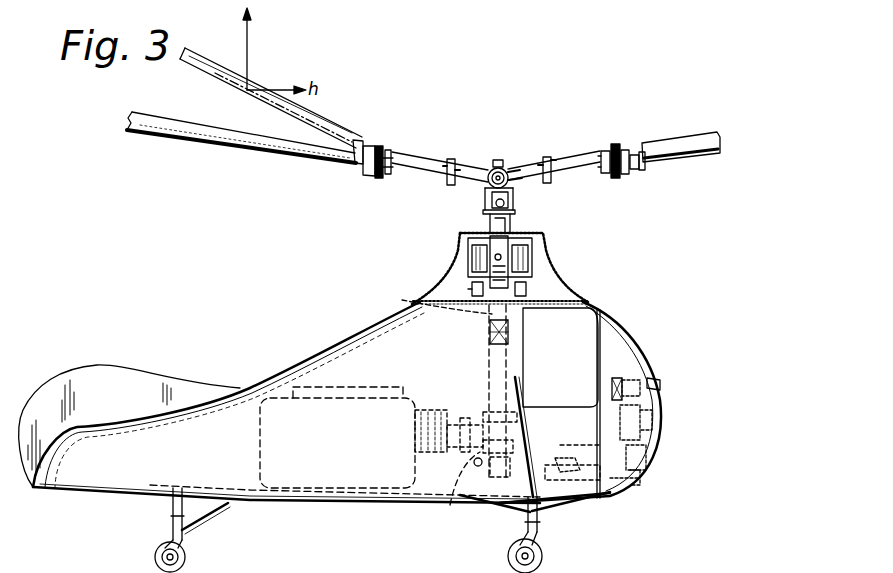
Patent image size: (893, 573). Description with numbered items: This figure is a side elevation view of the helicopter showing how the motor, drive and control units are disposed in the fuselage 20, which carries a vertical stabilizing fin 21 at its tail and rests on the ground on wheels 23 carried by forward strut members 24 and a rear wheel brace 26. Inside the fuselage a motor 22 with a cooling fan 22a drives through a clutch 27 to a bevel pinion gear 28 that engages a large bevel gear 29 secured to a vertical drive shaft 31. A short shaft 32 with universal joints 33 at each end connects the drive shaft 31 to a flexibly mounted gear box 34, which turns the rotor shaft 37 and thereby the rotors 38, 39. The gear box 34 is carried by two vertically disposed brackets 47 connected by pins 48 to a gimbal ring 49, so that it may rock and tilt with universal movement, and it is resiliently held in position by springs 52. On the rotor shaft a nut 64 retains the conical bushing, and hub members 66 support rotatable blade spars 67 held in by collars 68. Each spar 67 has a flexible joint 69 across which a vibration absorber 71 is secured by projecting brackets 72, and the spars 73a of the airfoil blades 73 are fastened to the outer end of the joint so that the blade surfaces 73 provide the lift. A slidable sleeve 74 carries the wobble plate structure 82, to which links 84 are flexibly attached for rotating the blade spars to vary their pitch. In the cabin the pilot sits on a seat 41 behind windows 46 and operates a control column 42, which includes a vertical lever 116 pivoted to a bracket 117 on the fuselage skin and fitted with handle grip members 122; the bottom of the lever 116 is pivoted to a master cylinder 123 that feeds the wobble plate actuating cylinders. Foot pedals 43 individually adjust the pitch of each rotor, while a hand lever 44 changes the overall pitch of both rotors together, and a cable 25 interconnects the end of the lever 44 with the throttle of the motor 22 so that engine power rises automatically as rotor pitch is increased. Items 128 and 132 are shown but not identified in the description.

The fuselage 20 is at (322, 356).
The vertical stabilizing fin 21 is at (102, 380).
The motor 22 is at (313, 498).
The cooling fan 22a is at (293, 392).
The wheels 23 is at (544, 560).
The forward strut members 24 is at (546, 512).
The cable 25 is at (450, 508).
The rear wheel brace 26 is at (204, 517).
The clutch 27 is at (436, 408).
The bevel pinion gear 28 is at (475, 418).
The large bevel gear 29 is at (520, 440).
The vertical drive shaft 31 is at (512, 362).
The short shaft 32 is at (534, 297).
The universal joints 33 is at (418, 299).
The gear box 34 is at (527, 235).
The rotor shaft 37 is at (485, 202).
The rotor 38 is at (527, 167).
The rotor 39 is at (524, 165).
The seat 41 is at (560, 458).
The control column 42 is at (642, 414).
The foot pedals 43 is at (644, 476).
The hand lever 44 is at (600, 498).
The windows 46 is at (600, 318).
The brackets 47 is at (472, 262).
The pins 48 is at (496, 256).
The gimbal ring 49 is at (528, 259).
The springs 52 is at (473, 288).
The nut 64 is at (497, 164).
The hub members 66 is at (467, 168).
The blade spars 67 is at (440, 163).
The collars 68 is at (457, 160).
The flexible joint 69 is at (385, 155).
The vibration absorber 71 is at (632, 168).
The projecting brackets 72 is at (603, 167).
The blades 73 is at (242, 136).
The blade spars 73a is at (369, 150).
The sleeve 74 is at (490, 222).
The wobble plate structure 82 is at (513, 207).
The links 84 is at (487, 190).
The vertical lever 116 is at (648, 455).
The bracket 117 is at (654, 422).
The handle grip members 122 is at (640, 372).
The master cylinder 123 is at (620, 490).
The control handle 128 is at (662, 388).
The control bellcrank 132 is at (642, 383).